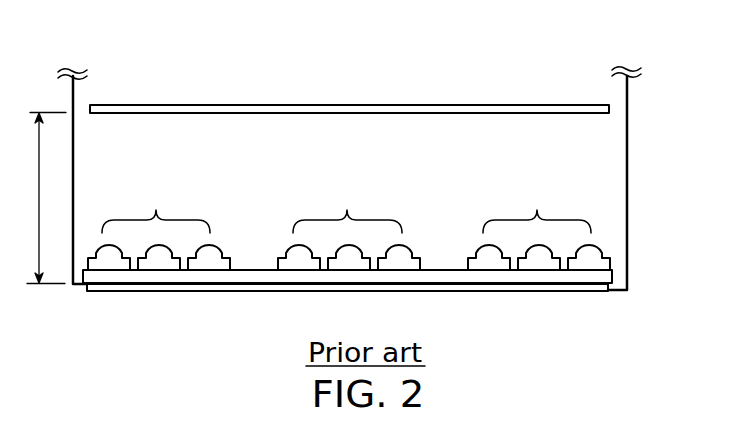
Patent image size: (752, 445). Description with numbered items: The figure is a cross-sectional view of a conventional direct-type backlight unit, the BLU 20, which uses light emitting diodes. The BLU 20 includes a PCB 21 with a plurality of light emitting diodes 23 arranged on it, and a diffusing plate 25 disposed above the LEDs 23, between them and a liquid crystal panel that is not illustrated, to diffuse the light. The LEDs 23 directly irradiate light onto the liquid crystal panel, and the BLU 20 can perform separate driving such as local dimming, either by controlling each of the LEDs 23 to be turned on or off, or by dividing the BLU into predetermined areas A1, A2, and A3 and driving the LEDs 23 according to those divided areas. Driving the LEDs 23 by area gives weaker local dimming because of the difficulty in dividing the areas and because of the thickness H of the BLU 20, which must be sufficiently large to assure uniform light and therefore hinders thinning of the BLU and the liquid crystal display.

The BLU 20 is at (345, 39).
The PCB 21 is at (605, 278).
The light emitting diodes 23 is at (587, 256).
The diffusing plate 25 is at (487, 105).
The A1 area A1 is at (156, 206).
The A2 area A2 is at (347, 206).
The A3 area A3 is at (537, 206).
The thickness H is at (37, 198).